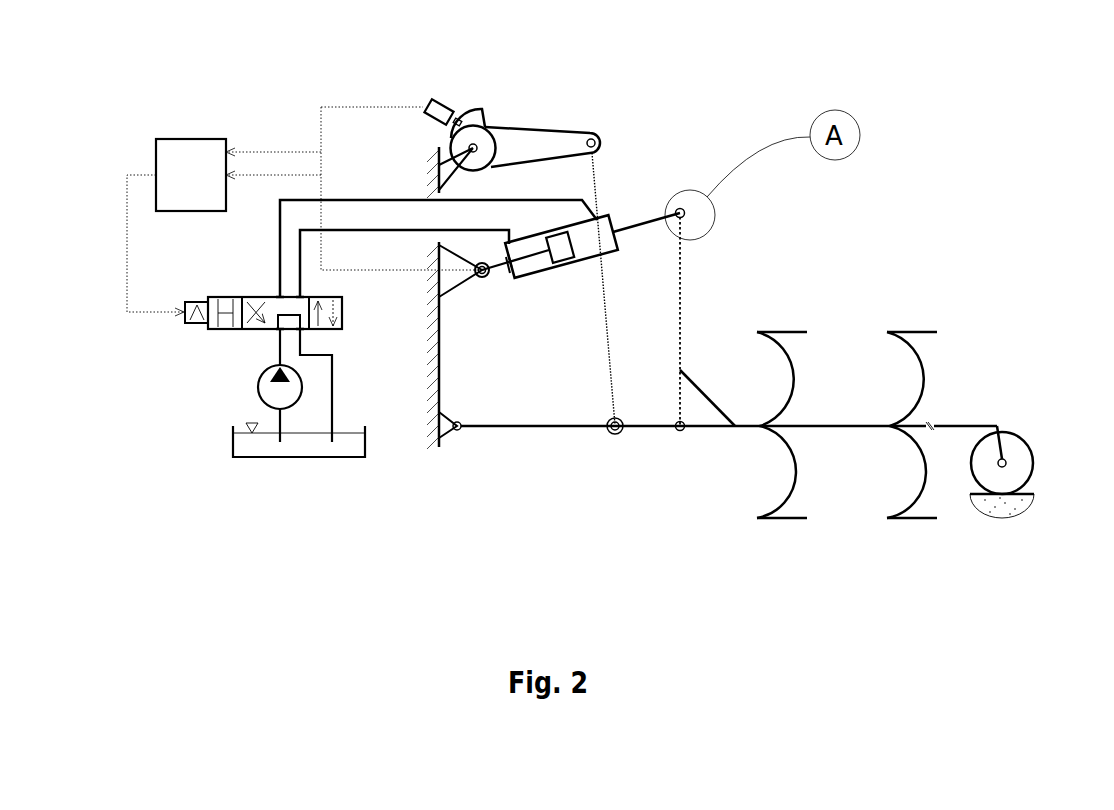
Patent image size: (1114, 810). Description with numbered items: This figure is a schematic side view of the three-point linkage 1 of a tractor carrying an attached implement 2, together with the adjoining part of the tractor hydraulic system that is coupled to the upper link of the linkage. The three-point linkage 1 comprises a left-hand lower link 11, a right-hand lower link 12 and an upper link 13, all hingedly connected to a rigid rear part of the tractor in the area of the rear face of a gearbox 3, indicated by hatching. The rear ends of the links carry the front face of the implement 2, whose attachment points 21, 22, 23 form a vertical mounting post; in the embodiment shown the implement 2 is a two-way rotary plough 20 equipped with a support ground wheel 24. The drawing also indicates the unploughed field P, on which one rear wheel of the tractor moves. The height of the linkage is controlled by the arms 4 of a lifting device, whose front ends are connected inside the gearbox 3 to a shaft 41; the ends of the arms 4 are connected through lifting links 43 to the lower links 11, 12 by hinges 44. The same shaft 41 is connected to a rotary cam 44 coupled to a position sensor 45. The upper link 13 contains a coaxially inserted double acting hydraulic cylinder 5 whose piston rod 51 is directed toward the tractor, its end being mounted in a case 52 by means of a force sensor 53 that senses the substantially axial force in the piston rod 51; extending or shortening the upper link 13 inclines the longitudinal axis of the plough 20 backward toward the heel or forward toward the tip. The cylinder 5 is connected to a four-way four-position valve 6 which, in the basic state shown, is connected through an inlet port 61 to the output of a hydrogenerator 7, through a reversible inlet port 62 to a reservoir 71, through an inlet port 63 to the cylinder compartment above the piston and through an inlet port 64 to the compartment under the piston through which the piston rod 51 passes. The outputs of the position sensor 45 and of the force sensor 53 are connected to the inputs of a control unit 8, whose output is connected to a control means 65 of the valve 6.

The three-point linkage 1 is at (628, 193).
The implement 2 is at (828, 392).
The two-way rotary plough 20 is at (912, 425).
The gearbox 3 is at (430, 415).
The arms of a lifting device 4 is at (516, 284).
The shaft 41 is at (470, 143).
The lifting links 43 is at (607, 313).
The rotary cam 44 is at (478, 115).
The position sensor 45 is at (432, 100).
The double acting hydraulic cylinder 5 is at (559, 267).
The piston rod 51 is at (540, 253).
The case 52 is at (485, 283).
The force sensor 53 is at (476, 283).
The four-way four-position valve 6 is at (218, 360).
The inlet port 61 is at (275, 332).
The reversible inlet port 62 is at (305, 332).
The inlet port 63 is at (272, 295).
The inlet port 64 is at (292, 295).
The control means 65 is at (185, 335).
The hydrogenerator 7 is at (223, 405).
The reservoir 71 is at (259, 447).
The control unit 8 is at (178, 153).
The left-hand lower link 11 is at (725, 512).
The right-hand lower link 12 is at (586, 430).
The upper link 13 is at (643, 218).
The attachment point 21 is at (684, 478).
The attachment point 22 is at (682, 430).
The attachment point 23 is at (683, 210).
The support ground wheel 24 is at (1010, 450).
The unploughed field P is at (1022, 500).